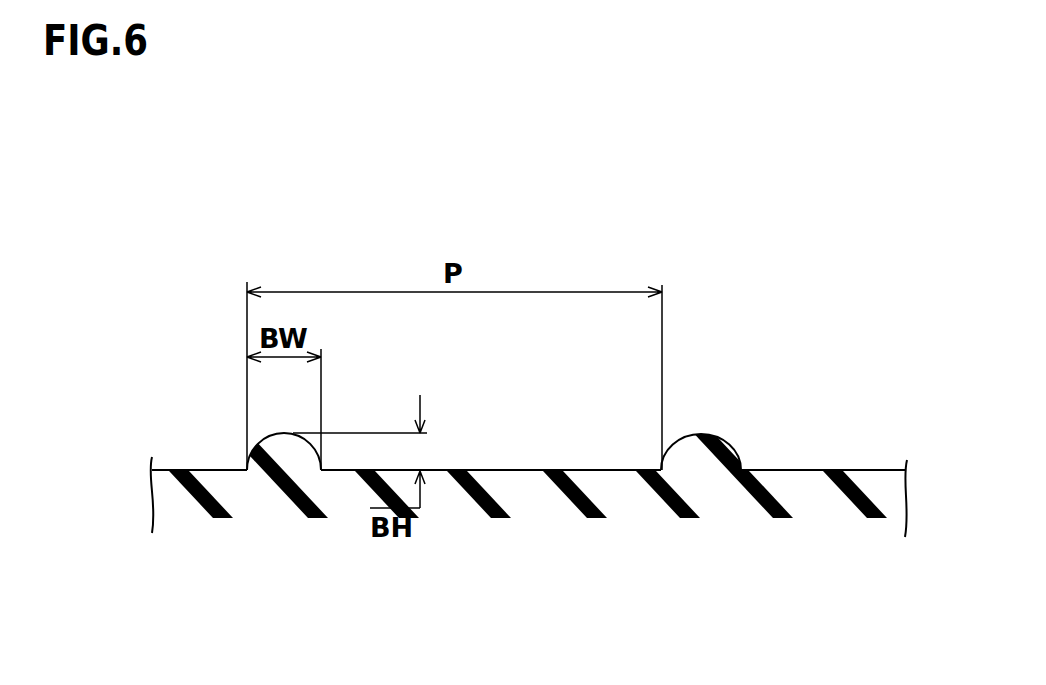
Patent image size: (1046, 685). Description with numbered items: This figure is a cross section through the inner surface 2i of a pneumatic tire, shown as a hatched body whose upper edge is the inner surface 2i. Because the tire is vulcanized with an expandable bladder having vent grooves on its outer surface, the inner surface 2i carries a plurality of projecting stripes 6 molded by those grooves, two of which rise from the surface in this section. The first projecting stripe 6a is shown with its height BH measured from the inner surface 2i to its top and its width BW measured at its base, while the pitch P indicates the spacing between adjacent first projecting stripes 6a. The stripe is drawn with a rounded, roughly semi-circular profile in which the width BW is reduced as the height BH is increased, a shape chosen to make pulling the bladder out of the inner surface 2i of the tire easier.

The inner surface 2i is at (865, 470).
The first projecting stripe 6a is at (263, 445).
The projecting stripes 6 is at (738, 430).